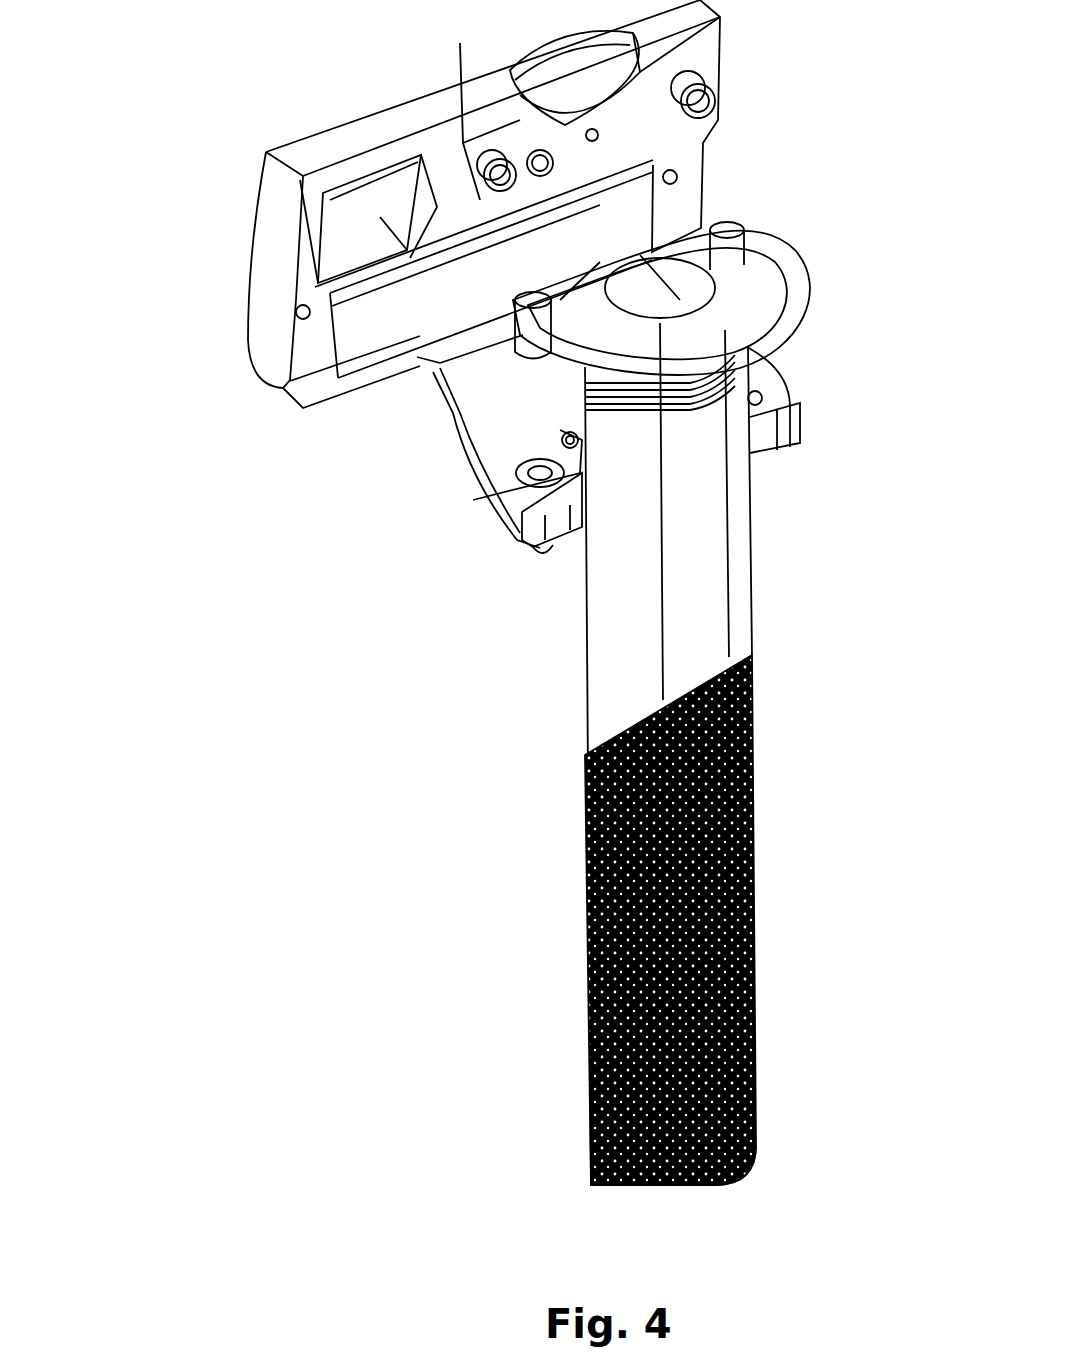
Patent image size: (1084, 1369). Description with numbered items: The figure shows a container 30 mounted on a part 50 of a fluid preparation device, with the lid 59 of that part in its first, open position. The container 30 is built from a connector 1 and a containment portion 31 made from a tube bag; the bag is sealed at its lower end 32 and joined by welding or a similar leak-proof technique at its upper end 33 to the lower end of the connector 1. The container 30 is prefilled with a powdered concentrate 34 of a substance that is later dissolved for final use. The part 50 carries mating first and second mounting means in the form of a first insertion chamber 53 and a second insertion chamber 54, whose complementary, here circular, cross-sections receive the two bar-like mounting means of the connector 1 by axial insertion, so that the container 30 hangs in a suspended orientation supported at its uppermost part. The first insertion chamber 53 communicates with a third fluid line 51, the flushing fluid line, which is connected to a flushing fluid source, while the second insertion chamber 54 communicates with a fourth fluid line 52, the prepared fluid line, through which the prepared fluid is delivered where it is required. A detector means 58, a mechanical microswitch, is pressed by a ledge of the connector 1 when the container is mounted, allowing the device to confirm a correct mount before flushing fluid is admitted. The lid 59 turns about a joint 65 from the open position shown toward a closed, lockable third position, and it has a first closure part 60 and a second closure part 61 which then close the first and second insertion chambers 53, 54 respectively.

The connector 1 is at (772, 270).
The container 30 is at (843, 583).
The containment portion 31 is at (747, 527).
The lower end 32 is at (740, 1163).
The upper end 33 is at (630, 405).
The powdered concentrate 34 is at (753, 782).
The part of fluid preparation device 50 is at (360, 448).
The third fluid line 51 is at (748, 463).
The fourth fluid line 52 is at (537, 547).
The first insertion chamber 53 is at (757, 398).
The second insertion chamber 54 is at (513, 480).
The detector means 58 is at (567, 443).
The lid 59 is at (297, 138).
The first closure part 60 is at (703, 102).
The second closure part 61 is at (503, 183).
The joint 65 is at (337, 347).